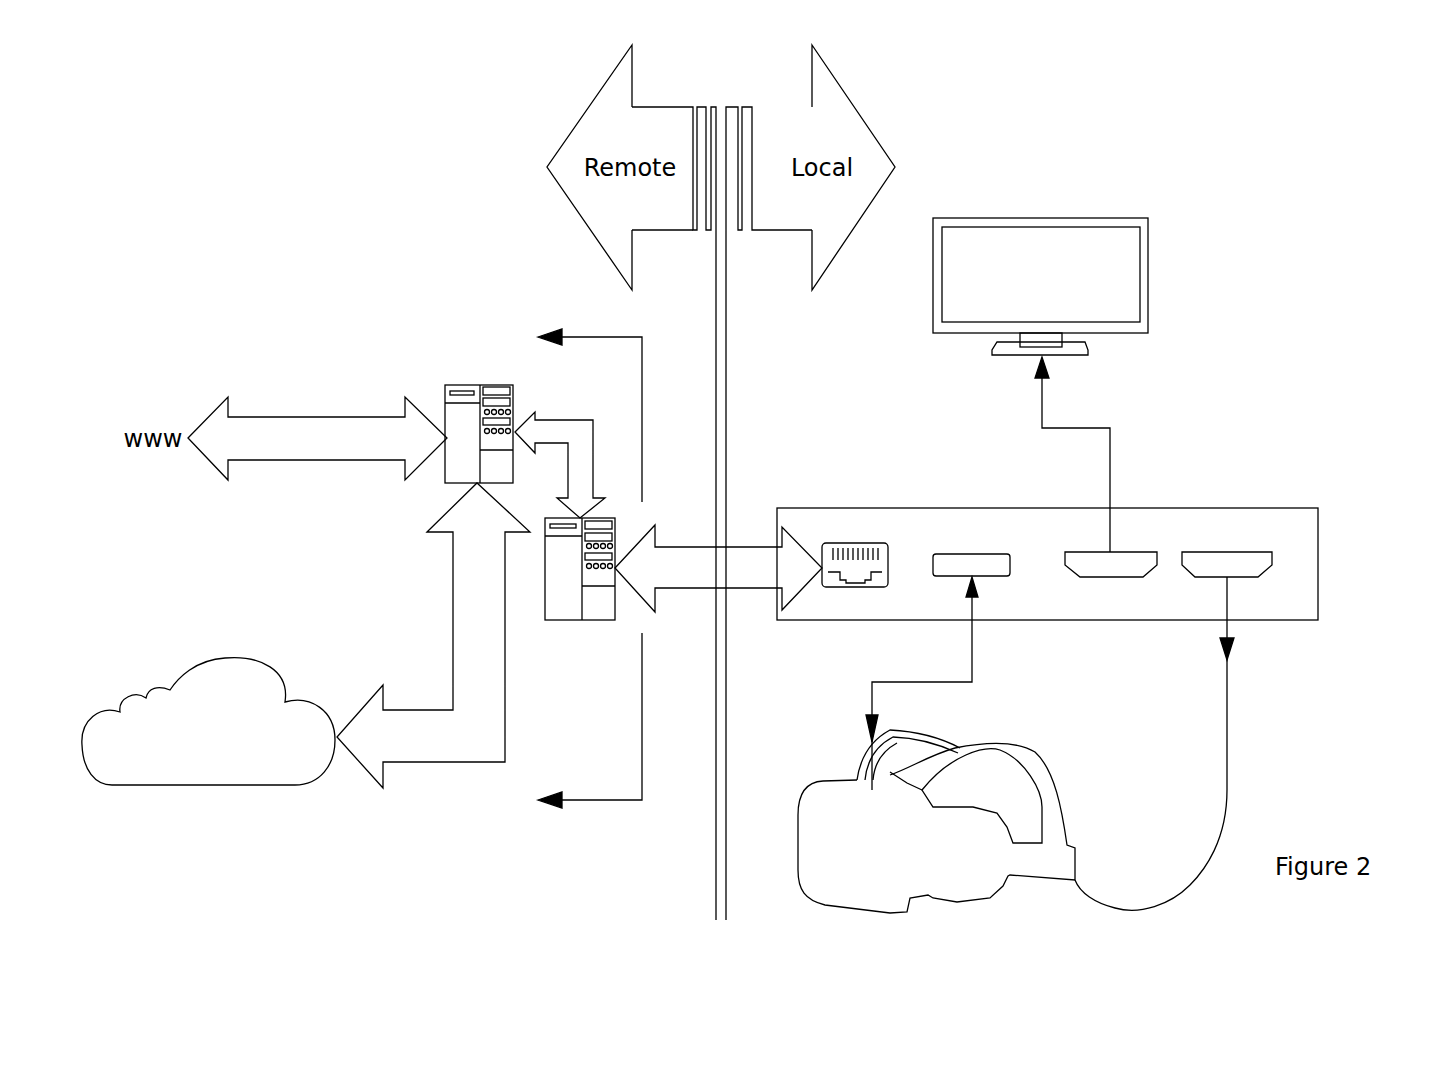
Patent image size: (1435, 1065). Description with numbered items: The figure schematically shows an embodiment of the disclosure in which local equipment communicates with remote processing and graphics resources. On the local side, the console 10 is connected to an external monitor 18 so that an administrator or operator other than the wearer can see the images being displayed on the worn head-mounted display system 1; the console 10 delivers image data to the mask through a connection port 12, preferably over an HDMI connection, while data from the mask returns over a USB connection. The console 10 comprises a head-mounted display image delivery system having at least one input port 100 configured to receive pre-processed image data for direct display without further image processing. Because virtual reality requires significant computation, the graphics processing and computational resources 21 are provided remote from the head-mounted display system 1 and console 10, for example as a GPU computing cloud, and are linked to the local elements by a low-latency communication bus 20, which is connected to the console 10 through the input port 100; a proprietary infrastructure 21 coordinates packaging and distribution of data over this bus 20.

The head-mounted display system 1 is at (1085, 770).
The console 10 is at (1318, 527).
The HDMI video output port 12 is at (1221, 552).
The external monitor 18 is at (1148, 288).
The low-latency communication bus 20 is at (718, 568).
The graphics processing and computational resources 21 is at (642, 400).
The input port 100 is at (843, 588).